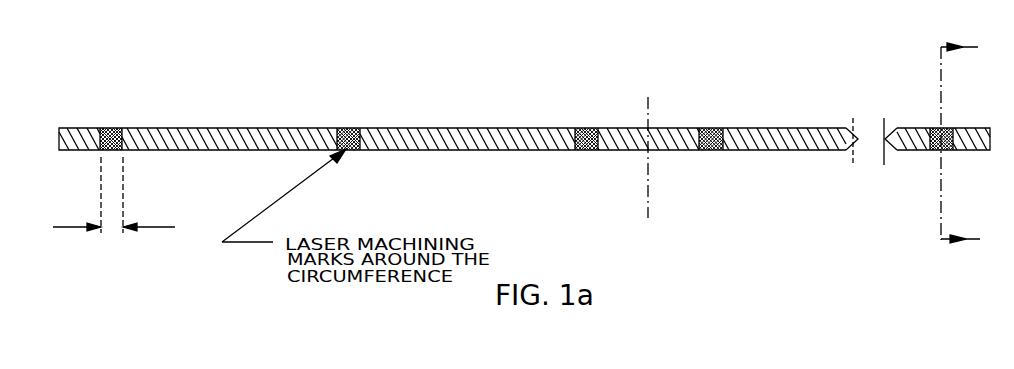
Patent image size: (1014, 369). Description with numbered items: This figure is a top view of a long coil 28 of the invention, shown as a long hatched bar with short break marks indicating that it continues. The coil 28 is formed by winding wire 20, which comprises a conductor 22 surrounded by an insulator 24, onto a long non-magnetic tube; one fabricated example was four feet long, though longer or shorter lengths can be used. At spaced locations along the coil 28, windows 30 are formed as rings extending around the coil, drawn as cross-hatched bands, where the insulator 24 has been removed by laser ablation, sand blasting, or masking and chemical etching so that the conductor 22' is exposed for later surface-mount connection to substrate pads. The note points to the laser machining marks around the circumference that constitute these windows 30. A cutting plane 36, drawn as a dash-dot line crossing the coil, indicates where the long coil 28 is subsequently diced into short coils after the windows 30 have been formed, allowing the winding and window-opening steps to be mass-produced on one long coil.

The wire 20 is at (151, 137).
The conductor 22 is at (229, 97).
The insulator 24 is at (281, 137).
The windows 30 is at (350, 130).
The exposed conductor 22' is at (466, 165).
The cutting plane 36 is at (650, 108).
The long coil 28 is at (740, 128).